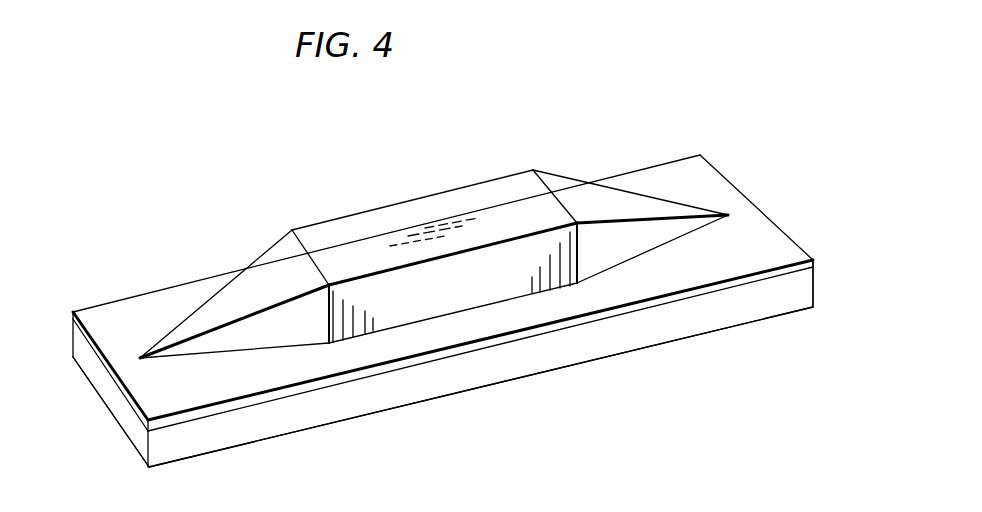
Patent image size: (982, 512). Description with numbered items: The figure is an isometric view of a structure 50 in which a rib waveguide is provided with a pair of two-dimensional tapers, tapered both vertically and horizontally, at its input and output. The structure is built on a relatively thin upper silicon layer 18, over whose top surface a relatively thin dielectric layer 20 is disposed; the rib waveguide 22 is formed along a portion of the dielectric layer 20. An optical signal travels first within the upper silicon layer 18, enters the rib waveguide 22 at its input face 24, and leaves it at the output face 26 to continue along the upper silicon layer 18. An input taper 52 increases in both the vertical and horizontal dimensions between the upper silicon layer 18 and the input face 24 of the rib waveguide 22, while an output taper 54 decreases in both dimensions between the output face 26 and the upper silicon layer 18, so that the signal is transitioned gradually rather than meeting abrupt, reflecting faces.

The upper silicon layer 18 is at (810, 280).
The dielectric layer 20 is at (772, 235).
The rib waveguide 22 is at (438, 213).
The input face 24 is at (303, 257).
The output face 26 is at (553, 192).
The structure 50 is at (91, 423).
The input taper 52 is at (220, 310).
The output taper 54 is at (647, 203).